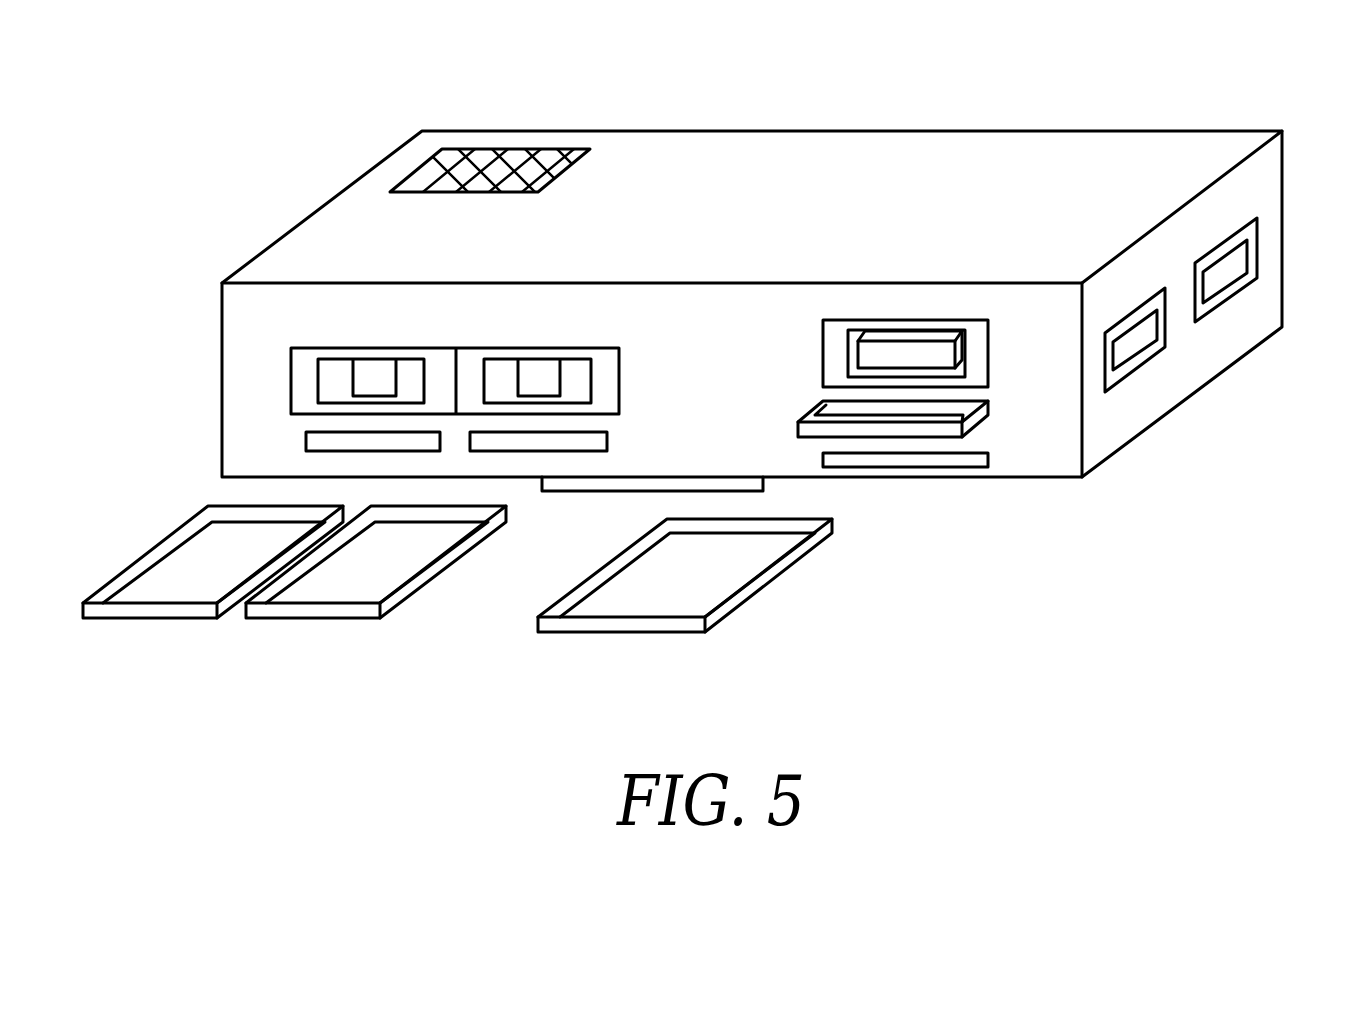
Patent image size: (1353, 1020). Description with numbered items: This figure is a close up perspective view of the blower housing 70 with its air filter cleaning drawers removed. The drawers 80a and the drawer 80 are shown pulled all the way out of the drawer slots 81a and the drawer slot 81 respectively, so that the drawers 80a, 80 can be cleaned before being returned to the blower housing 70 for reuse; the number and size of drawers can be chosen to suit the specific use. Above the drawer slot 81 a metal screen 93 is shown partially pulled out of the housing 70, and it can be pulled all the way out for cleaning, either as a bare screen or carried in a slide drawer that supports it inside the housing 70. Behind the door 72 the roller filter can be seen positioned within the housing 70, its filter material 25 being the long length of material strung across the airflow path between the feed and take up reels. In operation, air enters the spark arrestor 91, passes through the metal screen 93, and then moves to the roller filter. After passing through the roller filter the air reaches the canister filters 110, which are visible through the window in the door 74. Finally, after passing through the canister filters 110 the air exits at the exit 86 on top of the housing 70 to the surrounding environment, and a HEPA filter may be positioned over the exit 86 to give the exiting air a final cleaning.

The blower housing 70 is at (1062, 152).
The exit 86 is at (498, 155).
The door 74 is at (300, 363).
The canister filters 110 is at (368, 375).
The drawer slot 81a is at (322, 443).
The door 72 is at (978, 365).
The filter material 25 is at (870, 360).
The metal screen 93 is at (808, 428).
The drawer slot 81 is at (938, 457).
The spark arrestor 91 is at (578, 490).
The drawer 80 is at (750, 567).
The drawers 80a is at (150, 620).